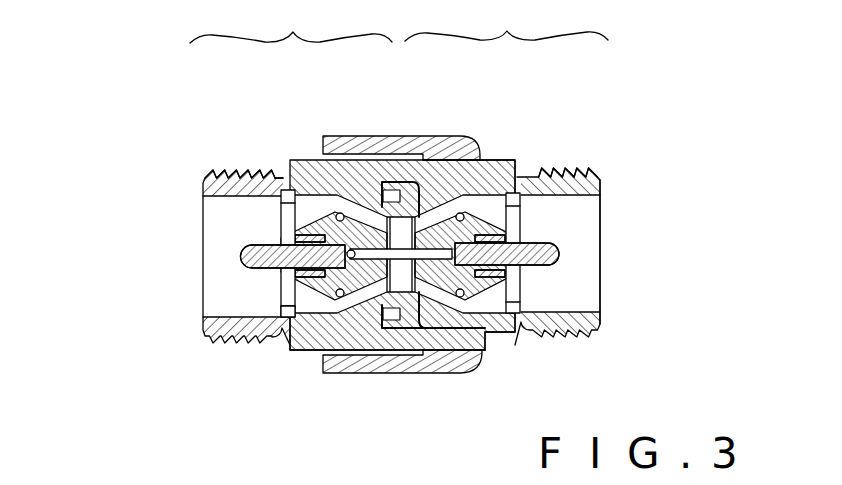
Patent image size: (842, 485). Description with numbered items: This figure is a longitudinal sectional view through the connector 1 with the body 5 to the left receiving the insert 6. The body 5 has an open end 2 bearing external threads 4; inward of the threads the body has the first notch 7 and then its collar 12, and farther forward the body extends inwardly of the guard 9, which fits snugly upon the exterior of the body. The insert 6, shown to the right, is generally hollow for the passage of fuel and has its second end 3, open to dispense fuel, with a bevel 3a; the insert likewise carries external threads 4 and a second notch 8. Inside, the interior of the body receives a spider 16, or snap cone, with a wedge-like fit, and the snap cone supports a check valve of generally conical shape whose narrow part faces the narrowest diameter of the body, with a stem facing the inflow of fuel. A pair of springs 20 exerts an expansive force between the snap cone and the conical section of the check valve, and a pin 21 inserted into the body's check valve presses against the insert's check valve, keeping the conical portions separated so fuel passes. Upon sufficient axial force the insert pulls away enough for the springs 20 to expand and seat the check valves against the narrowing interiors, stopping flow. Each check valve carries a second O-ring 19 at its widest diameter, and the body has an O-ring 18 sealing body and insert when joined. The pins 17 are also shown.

The coupling assembly 1 is at (116, 120).
The open end 2 is at (203, 253).
The second end 3 is at (603, 292).
The bevel 3a is at (601, 333).
The external threads 4 is at (235, 173).
The body 5 is at (423, 389).
The insert 6 is at (506, 22).
The first notch 7 is at (281, 175).
The second notch 8 is at (520, 160).
The guard 9 is at (298, 165).
The collar 12 is at (312, 352).
The spider 16 is at (281, 293).
The valve pin 17 is at (248, 248).
The O-ring 18 is at (336, 136).
The second O-ring 19 is at (486, 342).
The springs 20 is at (287, 190).
The pin 21 is at (296, 352).